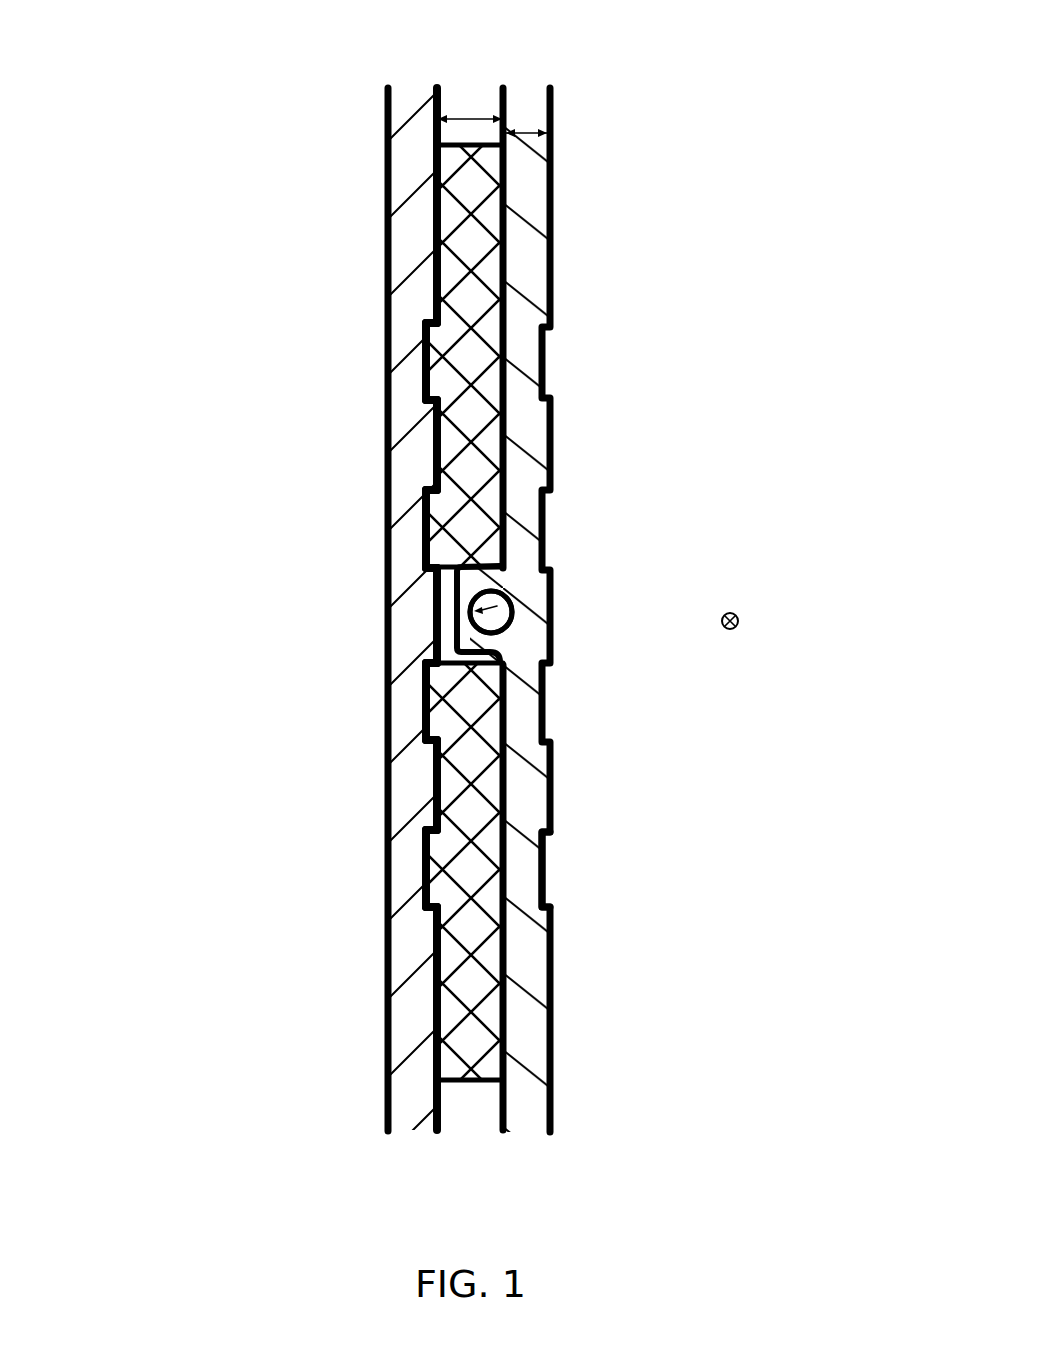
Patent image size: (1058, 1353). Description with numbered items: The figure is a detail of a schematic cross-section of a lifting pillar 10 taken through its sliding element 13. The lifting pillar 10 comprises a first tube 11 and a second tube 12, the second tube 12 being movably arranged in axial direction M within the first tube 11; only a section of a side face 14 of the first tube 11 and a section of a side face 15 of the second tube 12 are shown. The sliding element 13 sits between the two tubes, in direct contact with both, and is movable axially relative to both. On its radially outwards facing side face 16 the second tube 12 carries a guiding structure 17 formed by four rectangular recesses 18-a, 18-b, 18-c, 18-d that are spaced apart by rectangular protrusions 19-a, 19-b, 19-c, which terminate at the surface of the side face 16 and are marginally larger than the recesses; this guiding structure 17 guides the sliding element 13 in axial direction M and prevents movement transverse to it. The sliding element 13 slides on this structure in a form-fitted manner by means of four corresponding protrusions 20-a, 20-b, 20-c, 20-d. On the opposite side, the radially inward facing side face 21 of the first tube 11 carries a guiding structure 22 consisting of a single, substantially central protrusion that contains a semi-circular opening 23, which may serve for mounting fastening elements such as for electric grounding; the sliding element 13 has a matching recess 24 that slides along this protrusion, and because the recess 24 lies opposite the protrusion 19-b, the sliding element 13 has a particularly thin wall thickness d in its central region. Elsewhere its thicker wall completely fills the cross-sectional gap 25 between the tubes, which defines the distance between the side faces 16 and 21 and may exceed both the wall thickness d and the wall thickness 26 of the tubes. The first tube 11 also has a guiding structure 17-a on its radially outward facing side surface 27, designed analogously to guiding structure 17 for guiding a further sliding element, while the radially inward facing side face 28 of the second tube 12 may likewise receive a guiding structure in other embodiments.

The lifting pillar 10 is at (630, 232).
The first tube 11 is at (550, 738).
The second tube 12 is at (397, 1032).
The sliding element 13 is at (490, 432).
The side face of the first tube 14 is at (521, 518).
The side face of the second tube 15 is at (402, 705).
The radially outwards facing side face 16 is at (436, 1112).
The guiding structure 17 is at (427, 773).
The guiding structure 17-a is at (545, 883).
The recess 18-a is at (431, 868).
The recess 18-b is at (431, 701).
The recess 18-c is at (431, 529).
The recess 18-d is at (431, 361).
The protrusion 19-a is at (430, 808).
The protrusion 19-b is at (430, 622).
The protrusion 19-c is at (430, 448).
The protrusion of the sliding element 20-a is at (430, 872).
The protrusion of the sliding element 20-b is at (427, 728).
The protrusion of the sliding element 20-c is at (425, 532).
The protrusion of the sliding element 20-d is at (427, 372).
The radially inward facing side face 21 is at (515, 1096).
The guiding structure 22 is at (478, 643).
The semi-circular opening 23 is at (480, 590).
The recess of the sliding element 24 is at (491, 612).
The cross-sectional gap 25 is at (467, 118).
The wall thickness 26 is at (522, 132).
The radially outward facing side surface 27 is at (553, 985).
The radially inward facing side face 28 is at (380, 1080).
The wall thickness d is at (470, 577).
The axial direction M is at (738, 627).